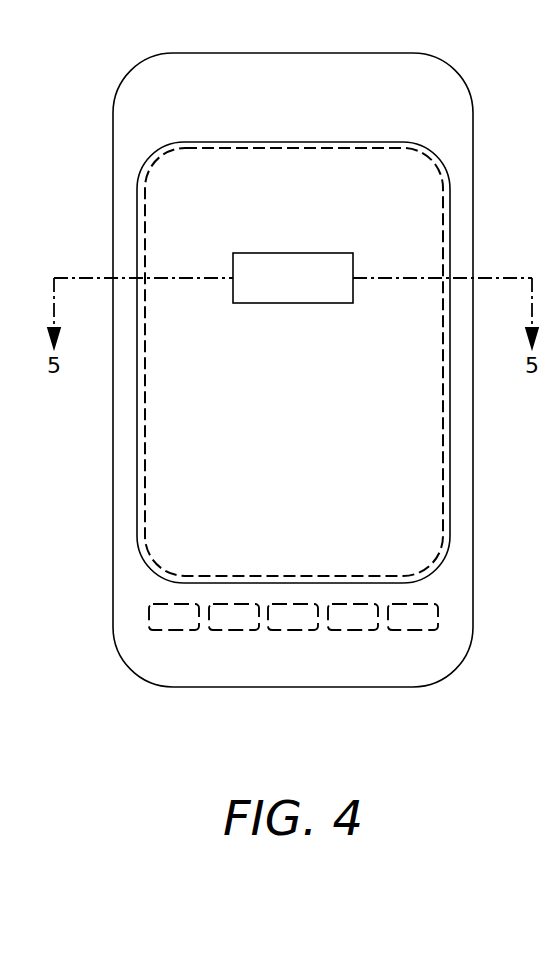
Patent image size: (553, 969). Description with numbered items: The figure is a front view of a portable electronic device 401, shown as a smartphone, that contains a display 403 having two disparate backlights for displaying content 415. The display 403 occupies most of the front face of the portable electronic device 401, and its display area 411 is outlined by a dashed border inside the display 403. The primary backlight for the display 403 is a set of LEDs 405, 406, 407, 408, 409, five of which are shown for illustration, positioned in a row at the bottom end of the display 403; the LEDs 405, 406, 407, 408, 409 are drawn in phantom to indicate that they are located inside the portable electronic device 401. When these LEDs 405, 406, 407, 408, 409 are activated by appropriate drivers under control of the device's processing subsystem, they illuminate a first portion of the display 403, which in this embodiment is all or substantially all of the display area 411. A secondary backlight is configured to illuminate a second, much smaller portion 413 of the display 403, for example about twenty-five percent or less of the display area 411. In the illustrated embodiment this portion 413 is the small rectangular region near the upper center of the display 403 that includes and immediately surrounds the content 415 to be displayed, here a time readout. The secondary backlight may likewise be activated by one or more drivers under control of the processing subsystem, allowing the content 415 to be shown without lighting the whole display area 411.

The portable electronic device 401 is at (120, 693).
The display 403 is at (283, 523).
The LED 405 is at (173, 630).
The LED 406 is at (233, 630).
The LED 407 is at (292, 630).
The LED 408 is at (352, 630).
The LED 409 is at (412, 630).
The display area 411 is at (147, 527).
The portion of the display 413 is at (291, 252).
The content 415 is at (291, 304).